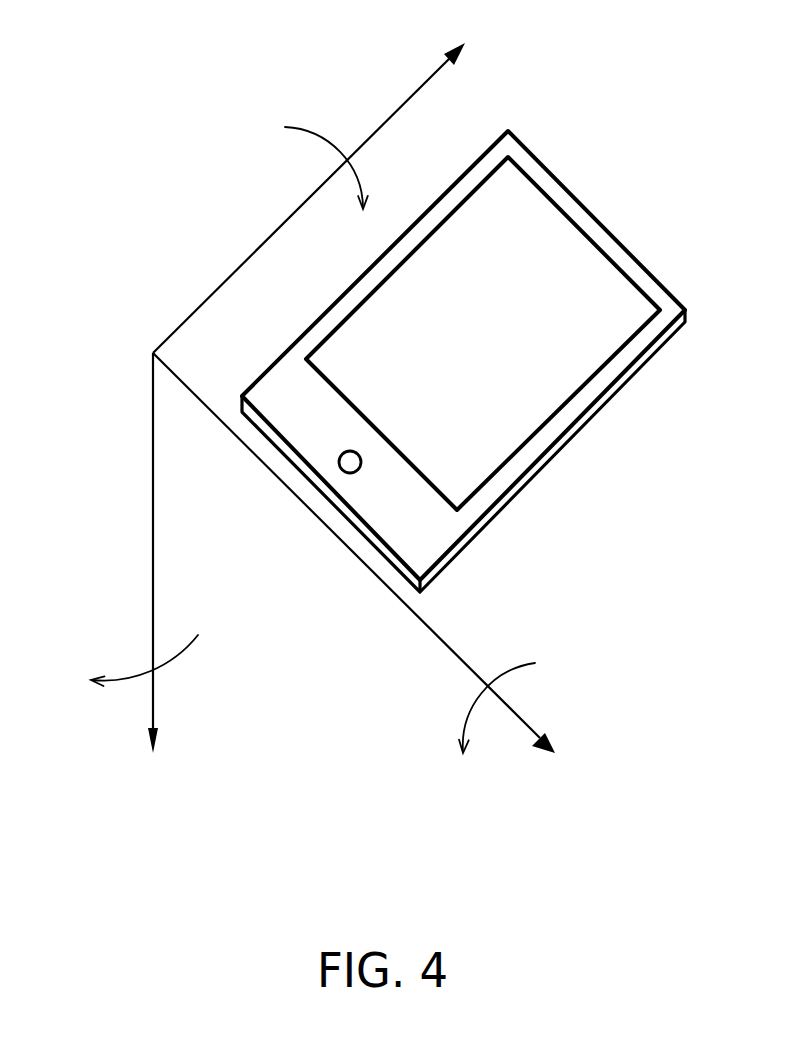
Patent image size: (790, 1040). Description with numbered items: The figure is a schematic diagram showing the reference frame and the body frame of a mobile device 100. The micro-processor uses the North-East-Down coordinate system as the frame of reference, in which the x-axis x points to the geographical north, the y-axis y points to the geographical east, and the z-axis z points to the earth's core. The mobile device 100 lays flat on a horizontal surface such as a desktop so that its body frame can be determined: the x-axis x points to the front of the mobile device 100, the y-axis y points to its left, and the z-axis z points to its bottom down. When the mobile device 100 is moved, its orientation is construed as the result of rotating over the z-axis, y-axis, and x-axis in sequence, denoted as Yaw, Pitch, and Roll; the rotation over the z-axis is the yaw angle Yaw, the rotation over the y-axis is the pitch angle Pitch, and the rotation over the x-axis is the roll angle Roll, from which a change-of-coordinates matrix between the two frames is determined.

The mobile device 100 is at (585, 230).
The x-axis x is at (309, 181).
The y-axis y is at (387, 567).
The z-axis z is at (190, 557).
The roll rotation Roll is at (293, 158).
The pitch rotation Pitch is at (515, 677).
The yaw rotation Yaw is at (121, 660).